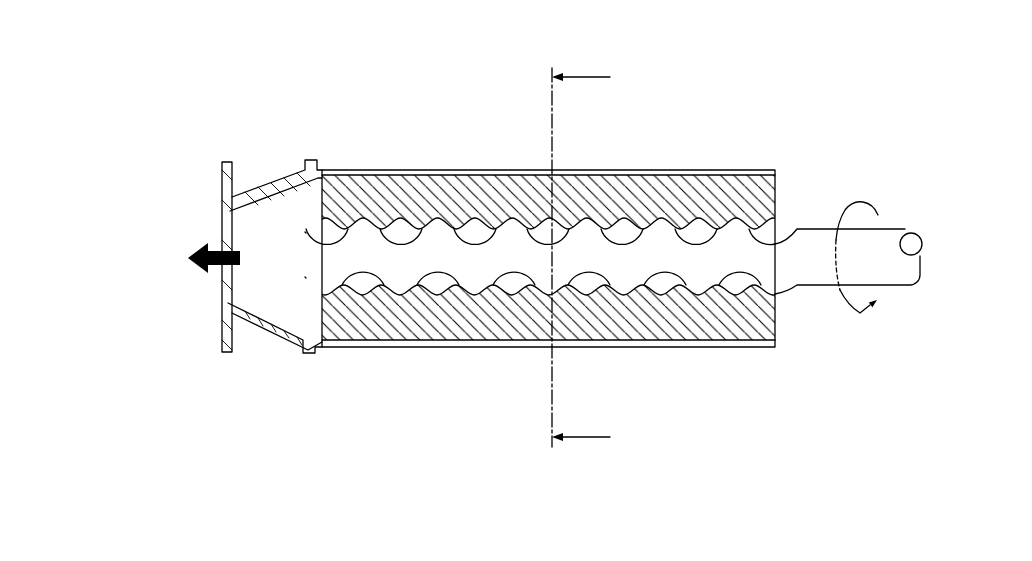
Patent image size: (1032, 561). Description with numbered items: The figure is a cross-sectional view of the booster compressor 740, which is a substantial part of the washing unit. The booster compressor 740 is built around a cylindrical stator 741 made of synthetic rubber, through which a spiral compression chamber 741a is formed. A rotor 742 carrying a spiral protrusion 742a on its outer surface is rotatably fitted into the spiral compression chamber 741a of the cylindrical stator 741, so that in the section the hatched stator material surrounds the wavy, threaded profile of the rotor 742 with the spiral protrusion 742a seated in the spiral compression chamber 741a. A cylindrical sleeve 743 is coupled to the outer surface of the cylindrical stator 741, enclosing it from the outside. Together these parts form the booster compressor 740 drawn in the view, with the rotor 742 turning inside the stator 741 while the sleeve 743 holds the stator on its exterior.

The booster compressor 740 is at (312, 100).
The cylindrical stator 741 is at (740, 327).
The spiral compression chamber 741a is at (433, 283).
The rotor 742 is at (812, 237).
The spiral protrusion 742a is at (627, 275).
The cylindrical sleeve 743 is at (477, 170).